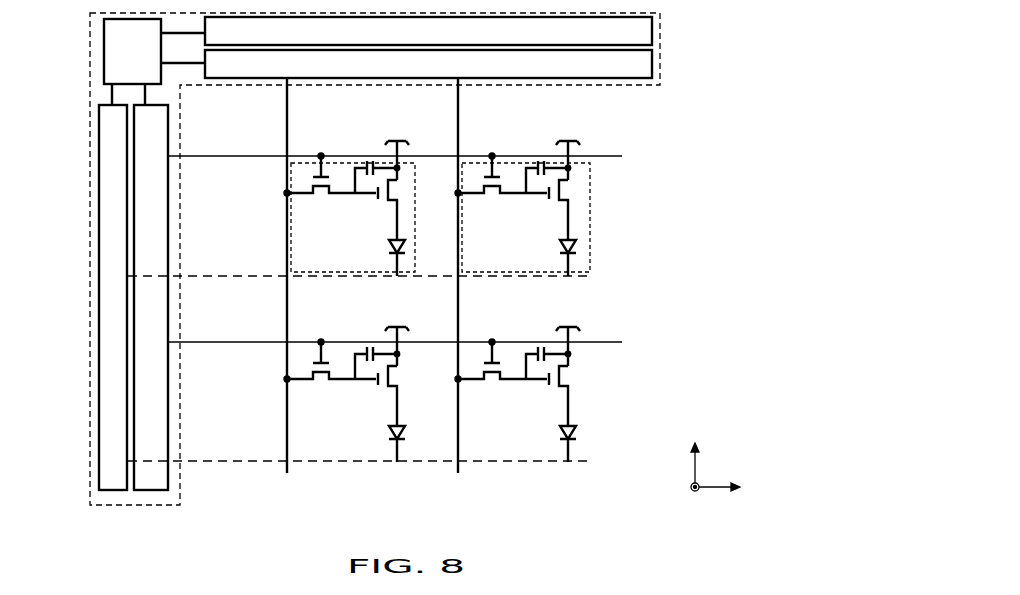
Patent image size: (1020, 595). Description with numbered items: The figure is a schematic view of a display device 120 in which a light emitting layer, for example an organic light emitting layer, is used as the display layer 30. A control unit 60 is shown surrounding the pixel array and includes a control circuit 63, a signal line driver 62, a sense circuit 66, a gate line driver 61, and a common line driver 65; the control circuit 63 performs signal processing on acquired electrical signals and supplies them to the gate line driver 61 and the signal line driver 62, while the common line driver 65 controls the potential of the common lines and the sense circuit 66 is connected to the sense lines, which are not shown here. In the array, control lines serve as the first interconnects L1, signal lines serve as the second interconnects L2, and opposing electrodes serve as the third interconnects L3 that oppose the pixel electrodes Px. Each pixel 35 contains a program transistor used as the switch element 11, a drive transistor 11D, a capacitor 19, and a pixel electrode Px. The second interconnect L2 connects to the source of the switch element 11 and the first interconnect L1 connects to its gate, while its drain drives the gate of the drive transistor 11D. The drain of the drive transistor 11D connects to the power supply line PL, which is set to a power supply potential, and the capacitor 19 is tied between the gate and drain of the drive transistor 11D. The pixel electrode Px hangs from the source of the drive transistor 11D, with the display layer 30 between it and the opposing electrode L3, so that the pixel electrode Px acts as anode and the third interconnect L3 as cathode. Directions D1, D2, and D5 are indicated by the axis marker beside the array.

The display device 120 is at (708, 81).
The control unit 60 is at (88, 491).
The control circuit 63 is at (104, 55).
The sense circuit 66 is at (654, 38).
The signal line driver 62 is at (654, 65).
The common line driver 65 is at (115, 490).
The gate line driver 61 is at (160, 490).
The first interconnect L1 is at (220, 158).
The second interconnect L2 is at (289, 445).
The third interconnect L3 is at (575, 281).
The power supply line PL is at (597, 145).
The pixel electrode Px is at (570, 200).
The switch element 11 is at (503, 152).
The drive transistor 11D is at (638, 204).
The capacitor 19 is at (548, 149).
The display layer 30 is at (631, 249).
The pixel 35 is at (646, 257).
The first direction D1 is at (735, 488).
The second direction D2 is at (700, 452).
The fifth direction D5 is at (700, 501).